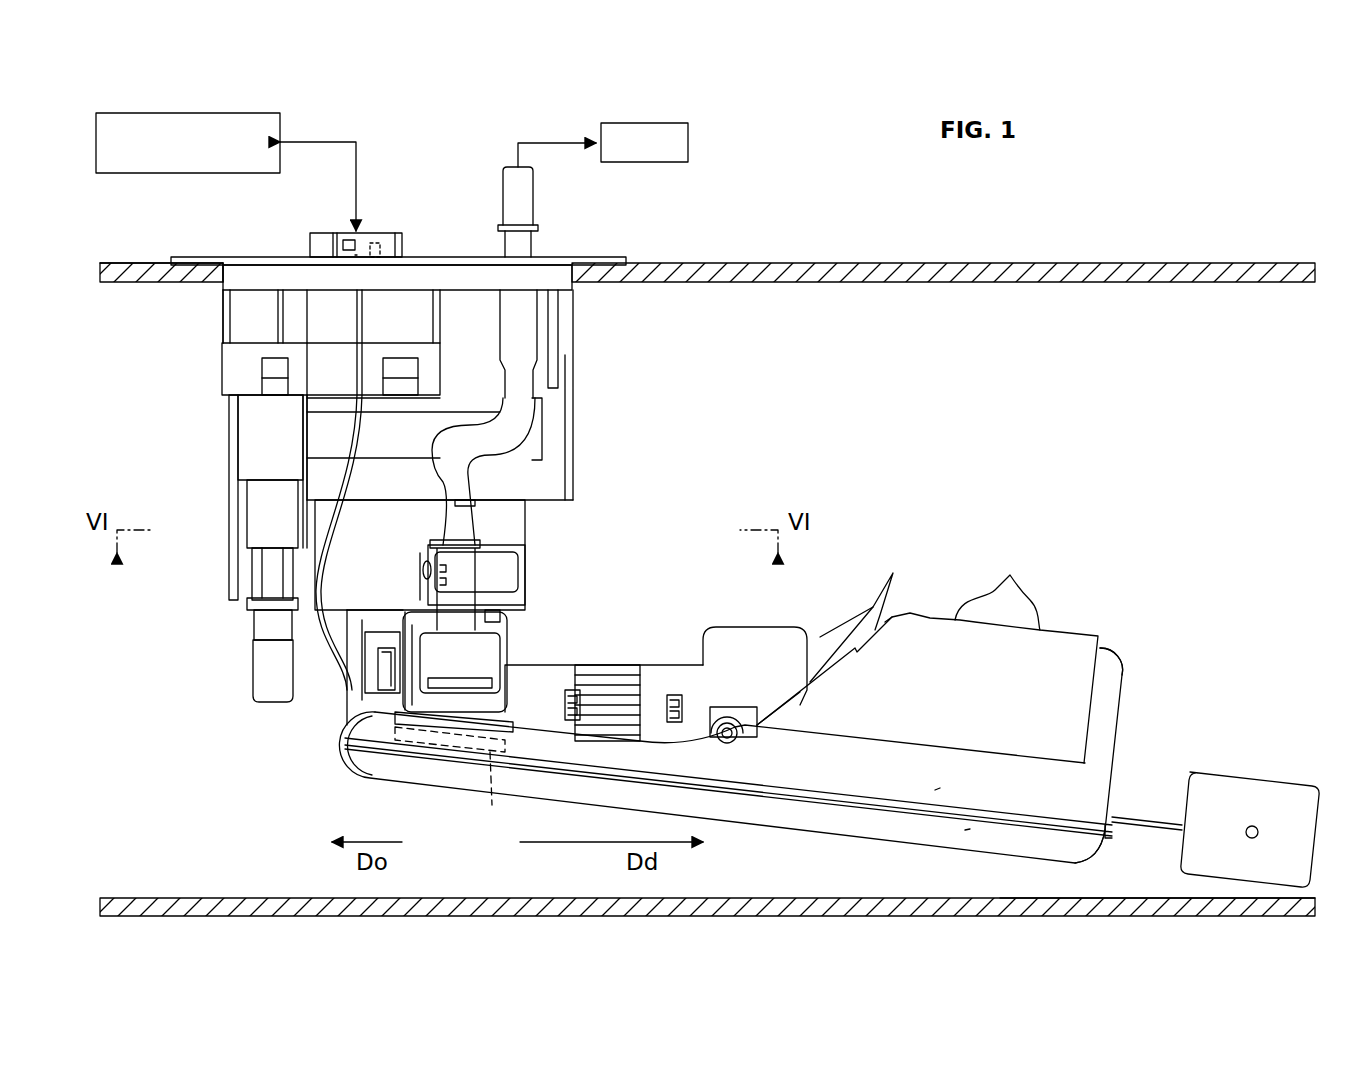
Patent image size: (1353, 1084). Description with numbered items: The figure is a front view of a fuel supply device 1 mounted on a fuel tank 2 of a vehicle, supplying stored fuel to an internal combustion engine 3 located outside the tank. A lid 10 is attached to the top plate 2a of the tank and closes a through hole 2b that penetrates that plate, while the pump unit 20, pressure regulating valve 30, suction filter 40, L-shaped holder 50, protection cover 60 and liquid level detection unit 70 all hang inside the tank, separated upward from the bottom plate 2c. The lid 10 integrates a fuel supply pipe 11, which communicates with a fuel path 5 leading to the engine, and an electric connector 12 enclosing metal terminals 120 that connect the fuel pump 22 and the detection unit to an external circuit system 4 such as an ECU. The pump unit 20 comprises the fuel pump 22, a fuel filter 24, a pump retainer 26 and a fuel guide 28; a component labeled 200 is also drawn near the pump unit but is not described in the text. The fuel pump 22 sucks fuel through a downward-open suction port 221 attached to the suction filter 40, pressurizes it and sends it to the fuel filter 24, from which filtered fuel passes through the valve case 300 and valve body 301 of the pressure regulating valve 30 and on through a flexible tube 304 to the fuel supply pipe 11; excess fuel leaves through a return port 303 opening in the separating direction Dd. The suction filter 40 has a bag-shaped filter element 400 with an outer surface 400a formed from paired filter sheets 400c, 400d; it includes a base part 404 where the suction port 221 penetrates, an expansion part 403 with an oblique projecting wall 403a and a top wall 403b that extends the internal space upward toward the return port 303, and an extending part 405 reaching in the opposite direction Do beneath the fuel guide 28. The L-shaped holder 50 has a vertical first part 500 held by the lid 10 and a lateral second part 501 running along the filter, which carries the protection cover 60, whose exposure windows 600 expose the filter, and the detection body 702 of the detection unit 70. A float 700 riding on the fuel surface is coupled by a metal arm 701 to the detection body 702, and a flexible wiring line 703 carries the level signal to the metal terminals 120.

The fuel supply device 1 is at (204, 380).
The fuel tank 2 is at (1065, 264).
The top plate 2a is at (130, 270).
The through hole 2b is at (222, 270).
The bottom plate 2c is at (1175, 900).
The internal combustion engine 3 is at (690, 143).
The external circuit system 4 is at (263, 113).
The fuel path 5 is at (522, 157).
The lid 10 is at (290, 262).
The fuel supply pipe 11 is at (533, 208).
The electric connector 12 is at (394, 233).
The pump unit 20 is at (578, 408).
The fuel pump 22 is at (500, 618).
The fuel filter 24 is at (530, 517).
The pump retainer 26 is at (378, 678).
The fuel guide 28 is at (362, 778).
The pressure regulating valve 30 is at (478, 568).
The suction filter 40 is at (1097, 862).
The L-shaped holder 50 is at (348, 712).
The protection cover 60 is at (1092, 712).
The liquid level detection unit 70 is at (718, 704).
The metal terminals 120 is at (378, 247).
The bracket 200 is at (405, 398).
The suction port 221 is at (458, 781).
The valve case 300 is at (520, 604).
The valve body 301 is at (495, 680).
The return port 303 is at (522, 571).
The flexible tube 304 is at (510, 440).
The filter element 400 is at (845, 850).
The outer surface 400a is at (652, 698).
The filter sheet 400c is at (935, 790).
The filter sheet 400d is at (965, 830).
The expansion part 403 is at (1113, 688).
The projecting wall 403a is at (732, 735).
The top wall 403b is at (1105, 652).
The base part 404 is at (440, 782).
The extending part 405 is at (352, 731).
The first part 500 is at (355, 628).
The second part 501 is at (590, 665).
The exposure windows 600 is at (930, 589).
The float 700 is at (1225, 792).
The arm 701 is at (1148, 816).
The detection body 702 is at (795, 708).
The flexible wiring line 703 is at (330, 655).